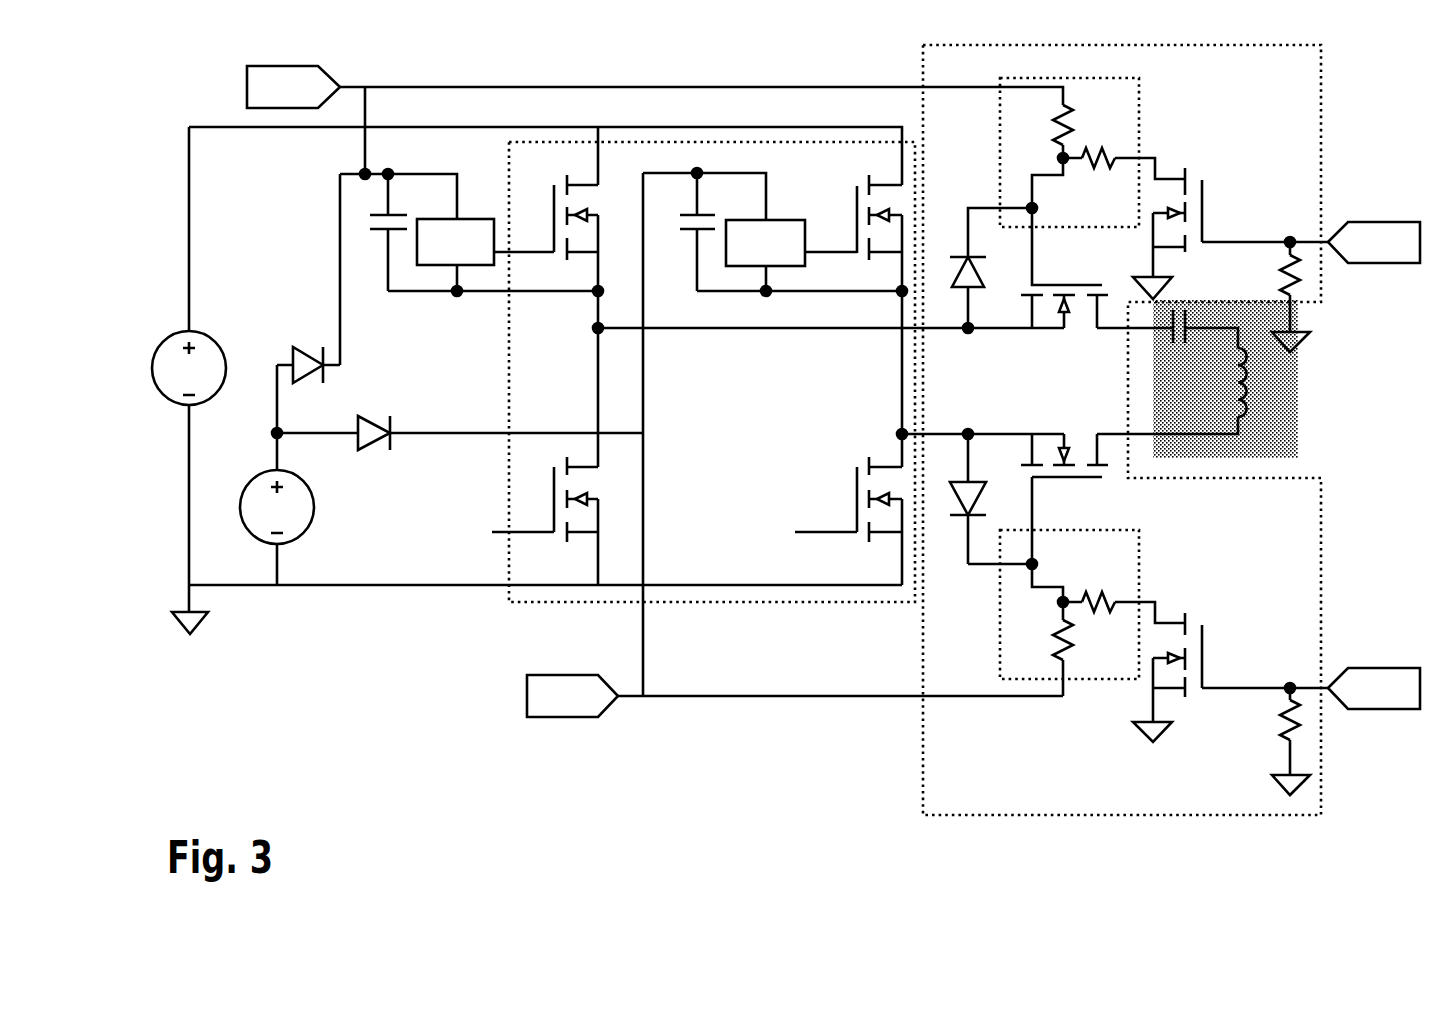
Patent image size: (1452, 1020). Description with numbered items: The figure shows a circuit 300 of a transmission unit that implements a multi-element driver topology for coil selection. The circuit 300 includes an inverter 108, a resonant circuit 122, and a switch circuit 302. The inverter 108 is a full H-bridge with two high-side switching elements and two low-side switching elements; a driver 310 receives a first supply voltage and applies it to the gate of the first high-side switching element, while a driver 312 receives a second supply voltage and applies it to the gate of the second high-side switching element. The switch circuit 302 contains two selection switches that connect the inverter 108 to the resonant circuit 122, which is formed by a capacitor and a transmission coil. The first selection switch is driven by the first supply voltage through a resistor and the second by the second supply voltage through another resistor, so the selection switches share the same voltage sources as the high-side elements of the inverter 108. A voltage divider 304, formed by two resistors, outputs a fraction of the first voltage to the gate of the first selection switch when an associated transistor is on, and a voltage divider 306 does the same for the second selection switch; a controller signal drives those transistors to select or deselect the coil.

The circuit 300 is at (297, 767).
The inverter 108 is at (528, 603).
The switch circuit 302 is at (923, 733).
The voltage divider 304 is at (1139, 109).
The voltage divider 306 is at (1139, 559).
The driver 310 is at (473, 255).
The driver 312 is at (784, 256).
The resonant circuit 122 is at (1272, 430).